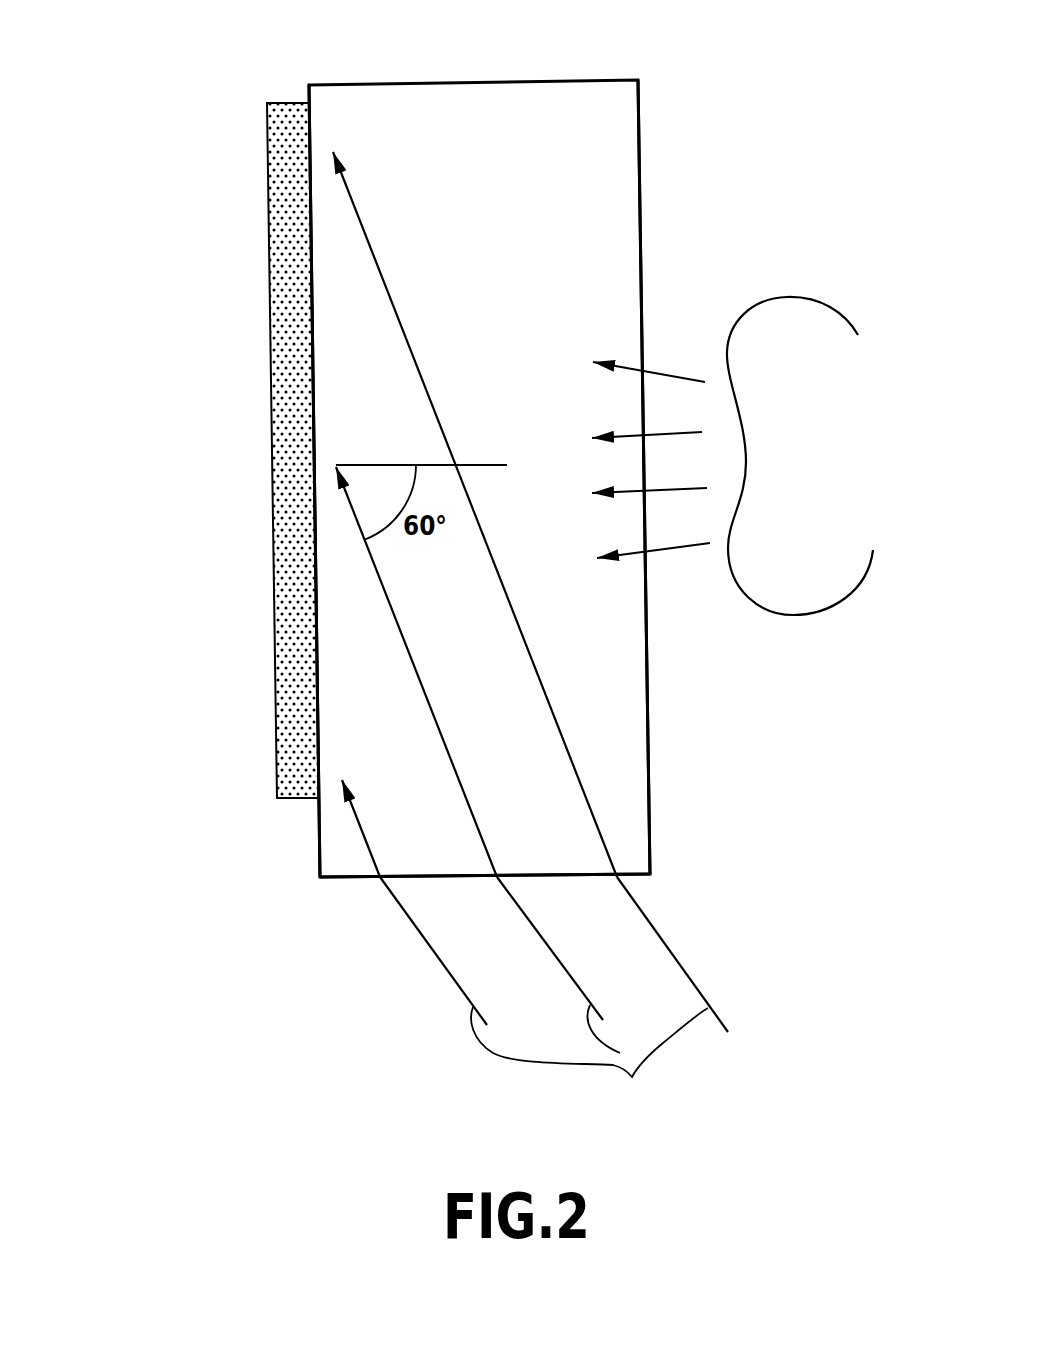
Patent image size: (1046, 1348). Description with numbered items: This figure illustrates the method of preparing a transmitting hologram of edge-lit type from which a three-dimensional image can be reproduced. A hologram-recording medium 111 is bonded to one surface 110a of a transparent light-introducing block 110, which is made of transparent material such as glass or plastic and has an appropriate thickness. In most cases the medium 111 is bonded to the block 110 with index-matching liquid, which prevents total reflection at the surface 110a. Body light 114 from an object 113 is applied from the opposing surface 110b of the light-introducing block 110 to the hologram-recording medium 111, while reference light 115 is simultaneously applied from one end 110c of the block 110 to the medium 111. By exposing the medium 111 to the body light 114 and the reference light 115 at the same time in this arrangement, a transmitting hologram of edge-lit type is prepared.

The light-introducing block 110 is at (493, 82).
The surface of light-introducing block 110a is at (308, 127).
The opposing surface of light-introducing block 110b is at (640, 112).
The end of light-introducing block 110c is at (646, 876).
The hologram-recording medium 111 is at (267, 182).
The object 113 is at (827, 315).
The body light 114 is at (675, 373).
The reference light 115 is at (530, 634).